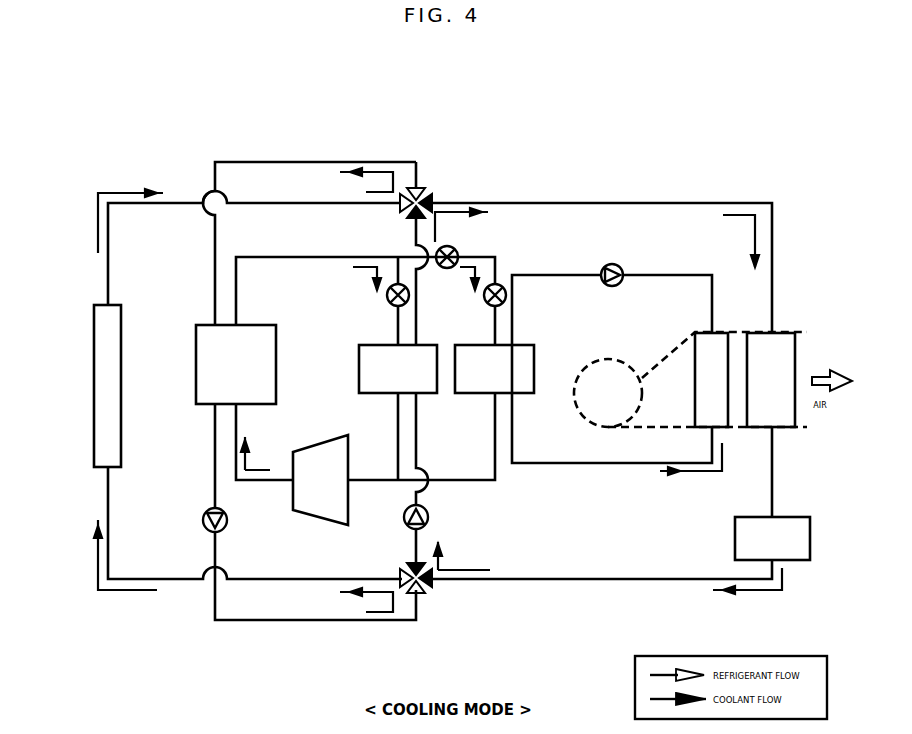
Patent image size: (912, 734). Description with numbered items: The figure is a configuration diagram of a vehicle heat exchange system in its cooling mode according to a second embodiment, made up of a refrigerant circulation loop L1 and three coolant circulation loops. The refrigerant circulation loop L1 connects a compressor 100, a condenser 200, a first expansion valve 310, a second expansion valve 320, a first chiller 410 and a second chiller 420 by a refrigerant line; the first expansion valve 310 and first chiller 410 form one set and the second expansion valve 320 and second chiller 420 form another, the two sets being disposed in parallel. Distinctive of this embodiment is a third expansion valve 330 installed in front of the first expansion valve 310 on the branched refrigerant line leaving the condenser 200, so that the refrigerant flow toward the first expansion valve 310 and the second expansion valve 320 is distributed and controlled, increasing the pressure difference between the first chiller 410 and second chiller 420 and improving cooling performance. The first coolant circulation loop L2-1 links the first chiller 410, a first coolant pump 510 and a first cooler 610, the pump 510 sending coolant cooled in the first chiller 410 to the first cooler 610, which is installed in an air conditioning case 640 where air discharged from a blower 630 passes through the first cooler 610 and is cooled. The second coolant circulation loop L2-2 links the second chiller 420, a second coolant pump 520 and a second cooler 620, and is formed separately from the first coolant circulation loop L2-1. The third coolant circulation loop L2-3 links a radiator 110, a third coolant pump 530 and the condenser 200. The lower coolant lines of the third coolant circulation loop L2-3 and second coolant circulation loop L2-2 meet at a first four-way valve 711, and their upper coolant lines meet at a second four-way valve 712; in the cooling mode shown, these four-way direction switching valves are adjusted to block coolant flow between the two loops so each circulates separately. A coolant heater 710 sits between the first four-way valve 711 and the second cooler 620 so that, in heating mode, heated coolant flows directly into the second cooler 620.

The compressor 100 is at (315, 516).
The radiator 110 is at (93, 386).
The condenser 200 is at (196, 347).
The first expansion valve 310 is at (498, 284).
The second expansion valve 320 is at (387, 291).
The third expansion valve 330 is at (458, 252).
The first chiller 410 is at (528, 335).
The second chiller 420 is at (359, 366).
The first coolant pump 510 is at (612, 263).
The second coolant pump 520 is at (428, 515).
The third coolant pump 530 is at (203, 520).
The first cooler 610 is at (728, 343).
The second cooler 620 is at (797, 345).
The blower 630 is at (620, 360).
The air conditioning case 640 is at (663, 370).
The coolant heater 710 is at (792, 560).
The first four-way valve 711 is at (420, 595).
The second four-way valve 712 is at (422, 188).
The refrigerant circulation loop L1 is at (296, 246).
The first coolant circulation loop L2-1 is at (590, 262).
The second coolant circulation loop L2-2 is at (702, 188).
The third coolant circulation loop L2-3 is at (188, 192).